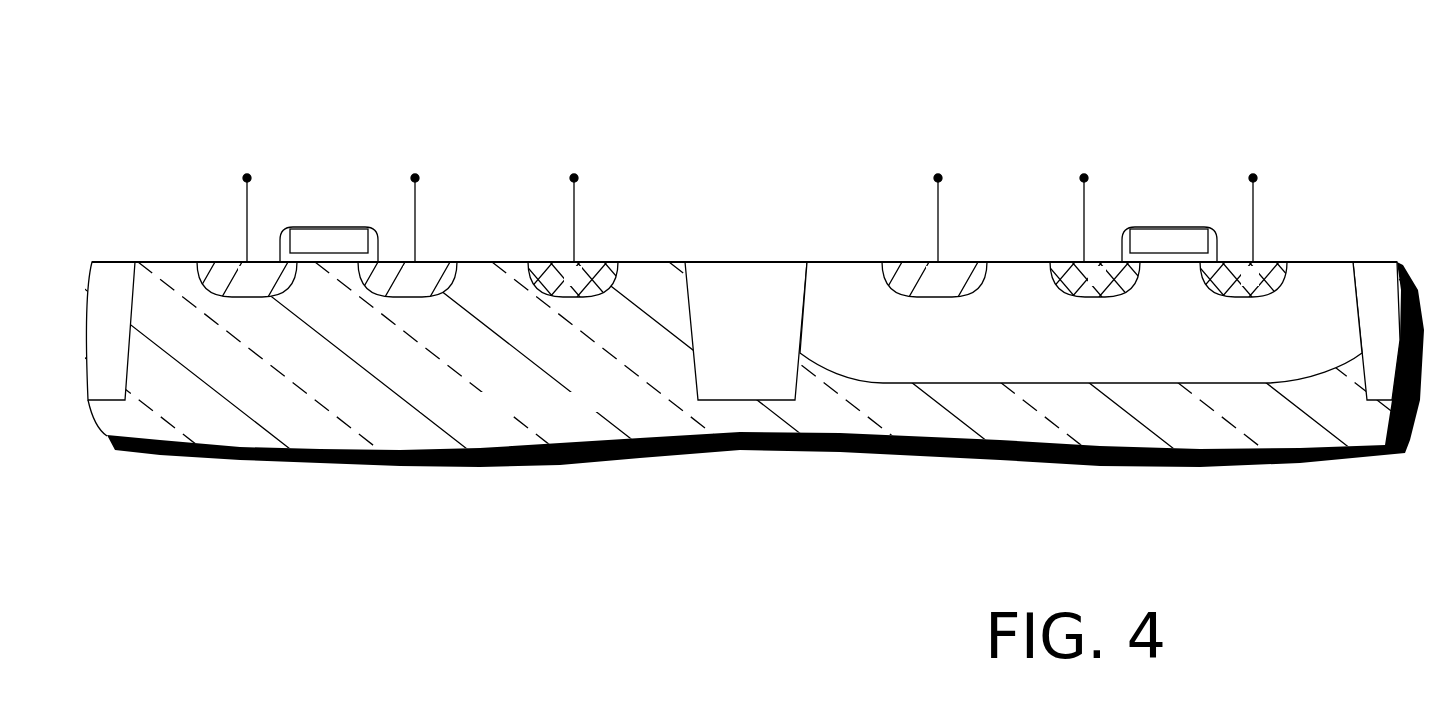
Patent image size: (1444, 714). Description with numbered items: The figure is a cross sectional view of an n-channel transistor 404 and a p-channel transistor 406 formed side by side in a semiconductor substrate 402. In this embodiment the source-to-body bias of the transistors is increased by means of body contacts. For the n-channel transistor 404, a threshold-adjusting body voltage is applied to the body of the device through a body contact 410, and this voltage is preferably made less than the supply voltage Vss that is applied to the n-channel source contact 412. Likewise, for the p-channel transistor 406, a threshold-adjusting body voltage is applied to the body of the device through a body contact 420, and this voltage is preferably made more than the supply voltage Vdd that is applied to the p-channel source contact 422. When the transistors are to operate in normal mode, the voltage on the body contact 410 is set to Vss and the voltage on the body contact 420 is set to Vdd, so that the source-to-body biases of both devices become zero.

The semiconductor substrate 402 is at (800, 456).
The n-channel transistor 404 is at (343, 90).
The p-channel transistor 406 is at (1176, 82).
The body contact 410 is at (575, 237).
The source contact 412 is at (247, 231).
The body contact 420 is at (938, 237).
The source contact 422 is at (1085, 237).